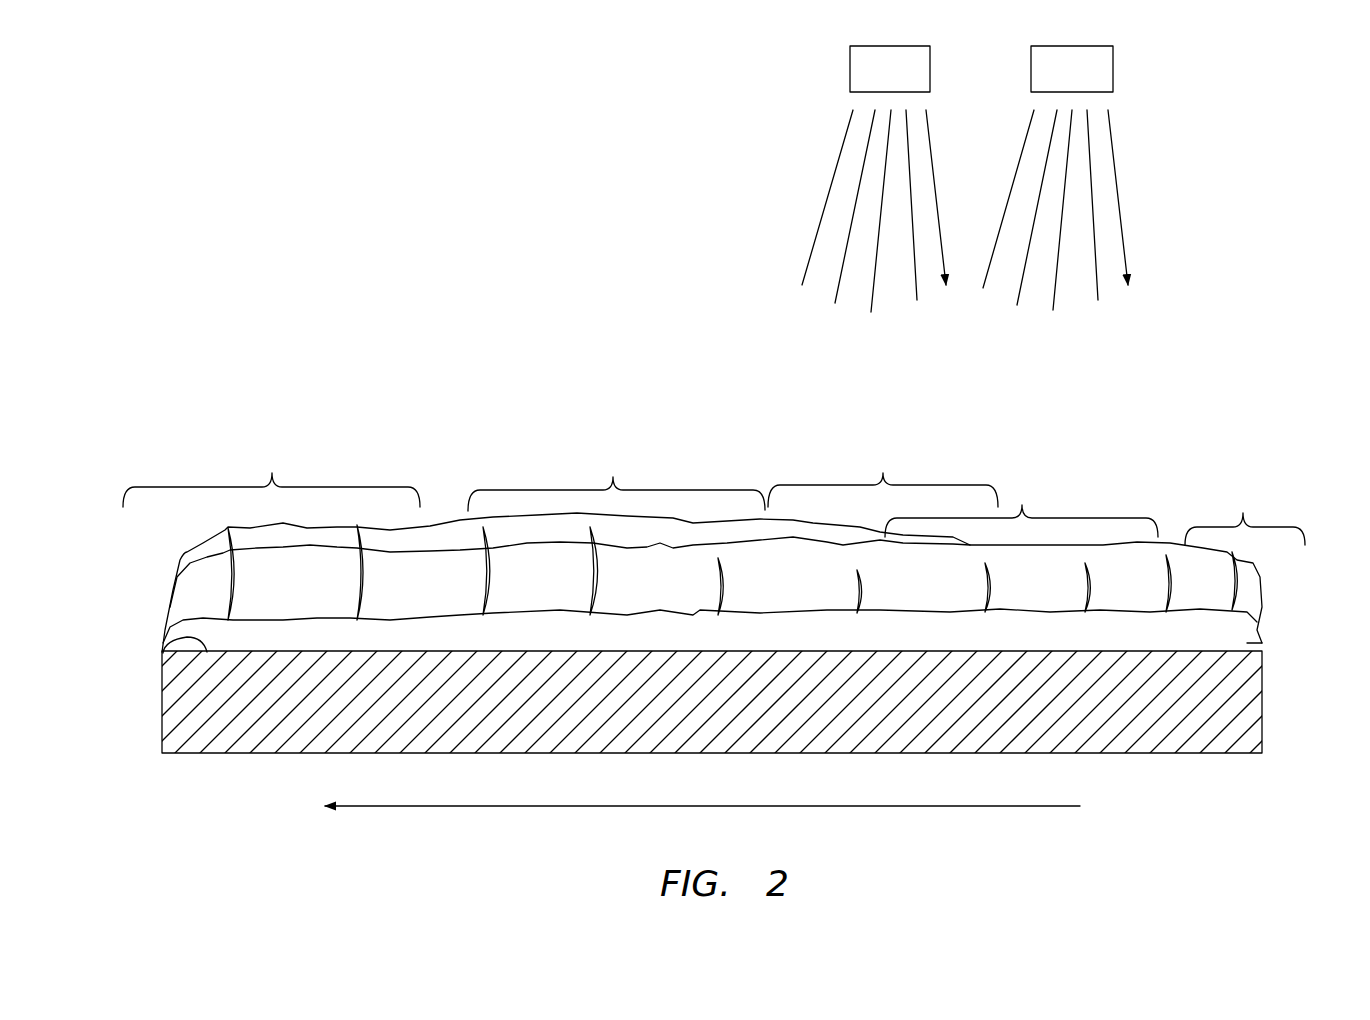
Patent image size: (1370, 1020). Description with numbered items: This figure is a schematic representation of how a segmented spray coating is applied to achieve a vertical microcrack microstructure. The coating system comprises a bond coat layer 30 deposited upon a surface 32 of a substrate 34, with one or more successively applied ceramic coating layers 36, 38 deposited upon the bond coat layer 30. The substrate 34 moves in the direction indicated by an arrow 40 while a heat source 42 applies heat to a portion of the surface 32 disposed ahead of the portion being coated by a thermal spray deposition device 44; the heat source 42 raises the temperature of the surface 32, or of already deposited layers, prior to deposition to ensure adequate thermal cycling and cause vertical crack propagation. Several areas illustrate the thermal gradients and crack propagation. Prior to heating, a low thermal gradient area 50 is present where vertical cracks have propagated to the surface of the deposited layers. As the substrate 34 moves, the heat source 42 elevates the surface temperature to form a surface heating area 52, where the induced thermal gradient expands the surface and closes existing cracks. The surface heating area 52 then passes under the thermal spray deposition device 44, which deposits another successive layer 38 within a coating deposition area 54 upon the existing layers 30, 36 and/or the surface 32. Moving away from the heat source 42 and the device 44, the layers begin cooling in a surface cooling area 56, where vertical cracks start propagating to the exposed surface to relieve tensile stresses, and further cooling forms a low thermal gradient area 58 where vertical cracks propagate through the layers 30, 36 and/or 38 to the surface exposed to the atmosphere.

The bond coat layer 30 is at (1262, 641).
The surface 32 is at (162, 651).
The substrate 34 is at (1268, 695).
The ceramic coating layer 36 is at (198, 586).
The ceramic coating layer 38 is at (442, 537).
The arrow 40 is at (1080, 803).
The heat source 42 is at (1087, 81).
The thermal spray deposition device 44 is at (905, 81).
The low thermal gradient area 50 is at (1245, 512).
The surface heating area 52 is at (1021, 504).
The coating deposition area 54 is at (883, 473).
The surface cooling area 56 is at (616, 476).
The low thermal gradient area 58 is at (271, 473).